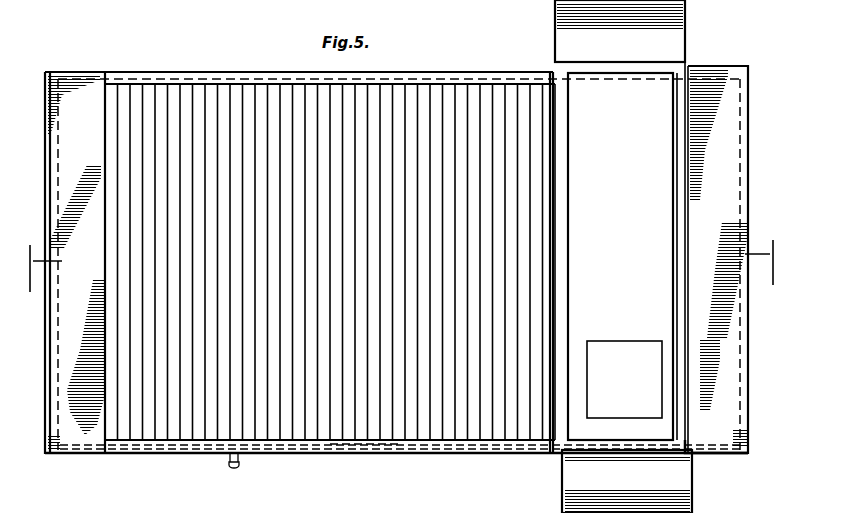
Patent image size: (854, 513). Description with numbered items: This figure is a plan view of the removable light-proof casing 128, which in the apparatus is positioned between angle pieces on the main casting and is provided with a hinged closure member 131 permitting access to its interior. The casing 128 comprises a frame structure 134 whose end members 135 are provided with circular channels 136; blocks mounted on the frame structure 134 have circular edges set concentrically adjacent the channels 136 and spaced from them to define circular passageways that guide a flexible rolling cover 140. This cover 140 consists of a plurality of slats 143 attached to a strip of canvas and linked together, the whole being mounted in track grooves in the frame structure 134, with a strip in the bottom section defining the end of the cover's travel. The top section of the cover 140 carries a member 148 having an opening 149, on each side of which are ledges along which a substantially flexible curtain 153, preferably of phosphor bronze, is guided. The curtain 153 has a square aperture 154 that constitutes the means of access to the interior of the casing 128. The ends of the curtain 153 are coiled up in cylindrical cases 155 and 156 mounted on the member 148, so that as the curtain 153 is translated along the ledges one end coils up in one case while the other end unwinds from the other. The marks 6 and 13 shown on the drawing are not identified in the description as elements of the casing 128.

The light-proof casing 128 is at (478, 72).
The frame structure 134 is at (248, 72).
The annotation 13 is at (232, 56).
The flexible rolling cover 140 is at (201, 421).
The hinged closure member 131 is at (283, 455).
The slats 143 is at (390, 433).
The end members 135 is at (60, 343).
The circular channels 136 is at (56, 233).
The section line 6- 6 is at (405, 266).
The flexible curtain 153 is at (655, 113).
The opening 149 is at (672, 214).
The square aperture 154 is at (620, 341).
The cylindrical case 156 is at (668, 33).
The cylindrical case 155 is at (683, 486).
The member 148 is at (692, 453).